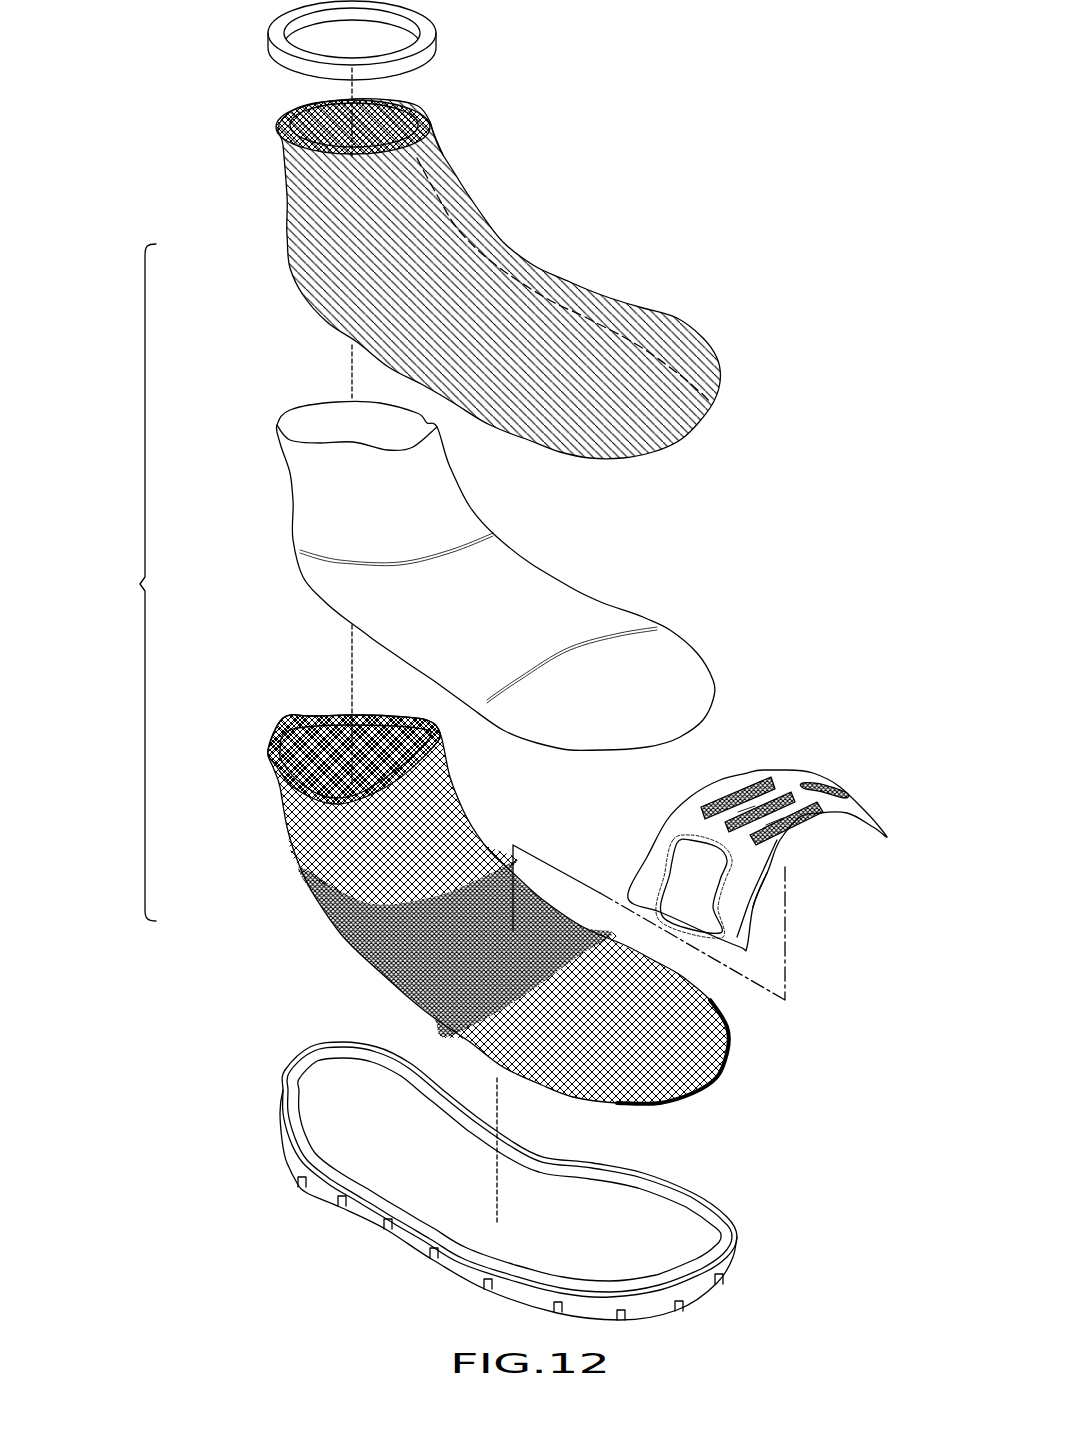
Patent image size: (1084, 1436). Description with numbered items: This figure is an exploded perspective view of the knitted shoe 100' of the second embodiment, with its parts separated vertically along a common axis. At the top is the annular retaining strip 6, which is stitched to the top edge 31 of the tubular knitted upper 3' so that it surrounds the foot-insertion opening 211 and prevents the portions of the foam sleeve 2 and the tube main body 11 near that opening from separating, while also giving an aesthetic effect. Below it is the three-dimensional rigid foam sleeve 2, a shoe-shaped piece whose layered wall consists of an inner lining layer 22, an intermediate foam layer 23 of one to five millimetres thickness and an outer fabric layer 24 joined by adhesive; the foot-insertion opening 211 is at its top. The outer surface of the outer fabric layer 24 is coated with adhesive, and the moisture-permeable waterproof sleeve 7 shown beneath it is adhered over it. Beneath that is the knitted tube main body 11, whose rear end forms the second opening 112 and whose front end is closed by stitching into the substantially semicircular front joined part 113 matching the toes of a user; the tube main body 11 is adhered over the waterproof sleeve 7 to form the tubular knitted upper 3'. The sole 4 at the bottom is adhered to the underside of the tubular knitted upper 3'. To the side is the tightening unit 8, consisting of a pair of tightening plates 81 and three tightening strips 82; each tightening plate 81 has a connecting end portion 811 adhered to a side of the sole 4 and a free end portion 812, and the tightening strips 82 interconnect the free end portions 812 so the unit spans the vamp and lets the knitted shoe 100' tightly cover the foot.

The knitted shoe 100' is at (503, 660).
The annular retaining strip 6 is at (435, 22).
The three-dimensional rigid foam sleeve 2 is at (438, 248).
The inner lining layer 22 is at (292, 118).
The foot-insertion opening 211 is at (418, 100).
The intermediate foam layer 23 is at (434, 120).
The outer fabric layer 24 is at (537, 273).
The tubular knitted upper 3' is at (460, 595).
The moisture-permeable waterproof sleeve 7 is at (322, 503).
The tube main body 11 is at (486, 893).
The second opening 112 is at (287, 724).
The top edge 31 is at (442, 734).
The front joined part 113 is at (722, 1078).
The tightening unit 8 is at (741, 805).
The tightening plates 81 is at (802, 775).
The tightening strips 82 is at (728, 792).
The connecting end portion 811 is at (640, 890).
The free end portion 812 is at (824, 876).
The sole 4 is at (327, 1223).